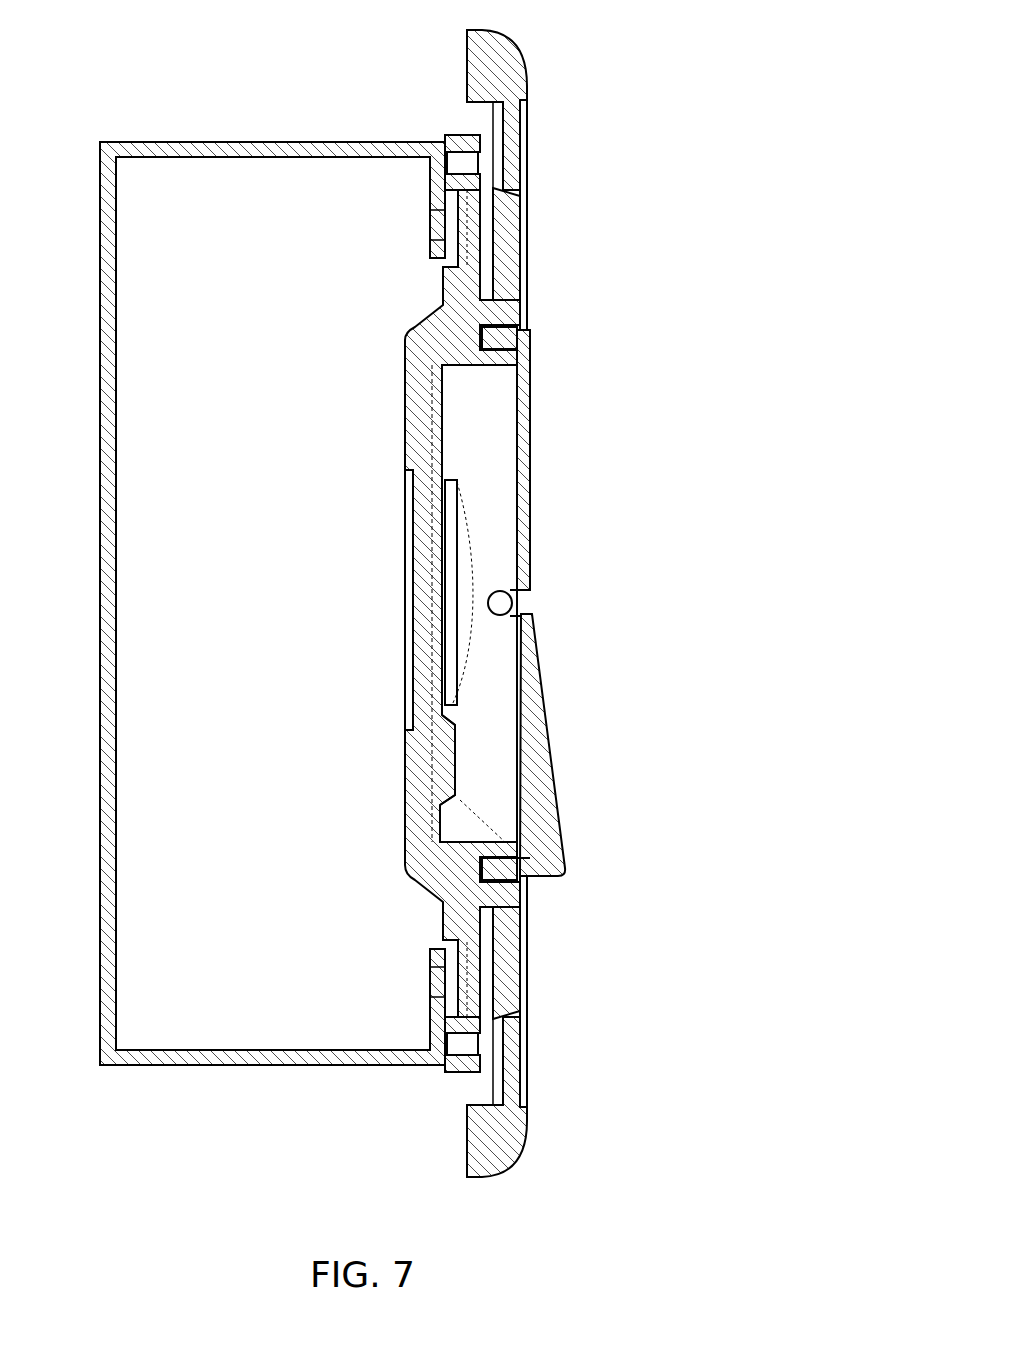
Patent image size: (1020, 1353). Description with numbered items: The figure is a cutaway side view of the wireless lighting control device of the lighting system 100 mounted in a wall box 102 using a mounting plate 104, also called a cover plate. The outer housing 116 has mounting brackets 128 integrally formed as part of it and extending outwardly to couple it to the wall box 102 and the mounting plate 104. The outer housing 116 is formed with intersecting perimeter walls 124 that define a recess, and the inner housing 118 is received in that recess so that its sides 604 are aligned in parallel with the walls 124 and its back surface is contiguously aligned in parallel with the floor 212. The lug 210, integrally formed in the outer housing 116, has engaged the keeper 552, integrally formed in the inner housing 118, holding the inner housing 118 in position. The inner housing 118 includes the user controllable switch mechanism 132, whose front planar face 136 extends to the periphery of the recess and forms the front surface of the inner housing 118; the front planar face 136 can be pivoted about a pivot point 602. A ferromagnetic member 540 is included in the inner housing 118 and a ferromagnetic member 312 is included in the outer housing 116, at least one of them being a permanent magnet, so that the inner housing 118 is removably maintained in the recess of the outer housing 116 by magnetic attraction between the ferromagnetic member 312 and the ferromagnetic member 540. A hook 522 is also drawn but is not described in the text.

The lighting system 100 is at (760, 432).
The wall box 102 is at (290, 142).
The mounting plate 104 is at (518, 50).
The outer housing 116 is at (433, 352).
The inner housing 118 is at (520, 470).
The walls 124 is at (527, 283).
The mounting brackets 128 is at (458, 135).
The user controllable switch mechanism 132 is at (574, 598).
The front planar face 136 is at (558, 805).
The lug 210 is at (440, 768).
The floor 212 is at (413, 420).
The ferromagnetic member 312 is at (405, 575).
The hook 522 is at (490, 363).
The ferromagnetic member 540 is at (452, 527).
The keeper 552 is at (462, 713).
The pivot point 602 is at (507, 583).
The sides 604 is at (467, 349).